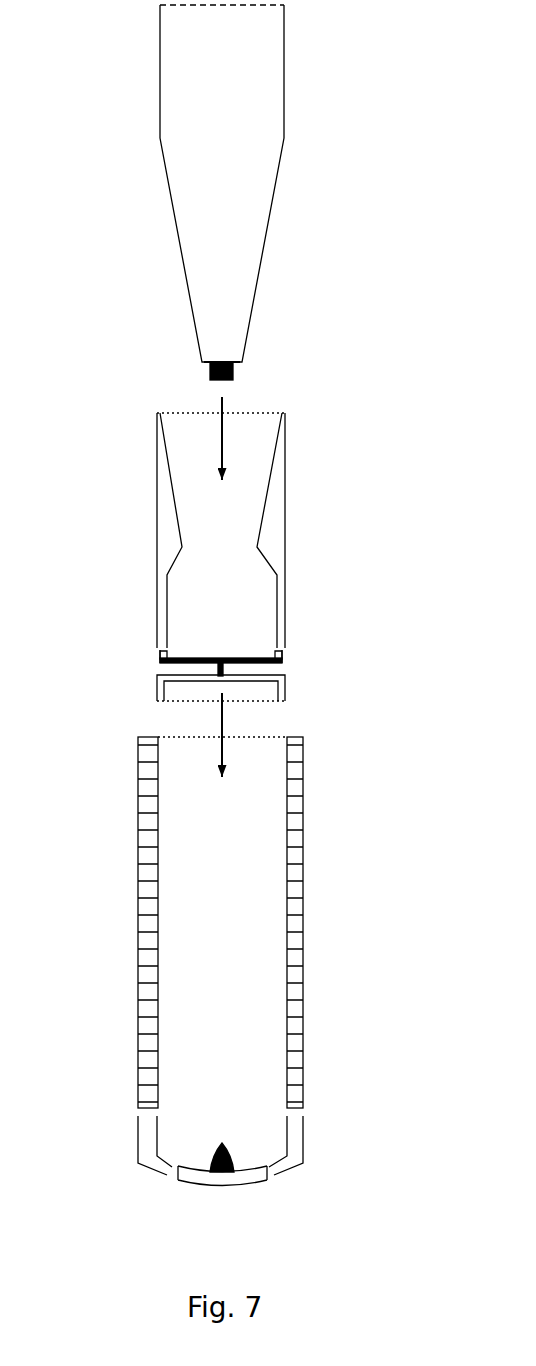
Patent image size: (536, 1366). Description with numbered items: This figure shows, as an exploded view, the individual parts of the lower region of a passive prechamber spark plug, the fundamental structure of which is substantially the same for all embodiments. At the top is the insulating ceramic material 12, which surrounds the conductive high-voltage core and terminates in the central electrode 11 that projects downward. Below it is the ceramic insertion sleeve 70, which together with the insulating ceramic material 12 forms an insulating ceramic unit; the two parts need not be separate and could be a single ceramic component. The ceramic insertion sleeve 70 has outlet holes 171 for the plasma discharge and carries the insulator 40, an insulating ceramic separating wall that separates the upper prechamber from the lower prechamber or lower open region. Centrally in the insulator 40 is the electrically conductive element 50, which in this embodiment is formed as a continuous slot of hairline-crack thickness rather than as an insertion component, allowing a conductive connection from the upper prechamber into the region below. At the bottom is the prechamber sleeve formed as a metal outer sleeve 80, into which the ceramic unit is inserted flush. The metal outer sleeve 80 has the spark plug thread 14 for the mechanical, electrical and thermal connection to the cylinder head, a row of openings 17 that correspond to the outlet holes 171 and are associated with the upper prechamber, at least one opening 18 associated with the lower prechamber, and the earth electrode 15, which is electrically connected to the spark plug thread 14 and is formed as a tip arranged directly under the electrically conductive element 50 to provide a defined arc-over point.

The insulating ceramic material 12 is at (221, 192).
The central electrode 11 is at (236, 375).
The ceramic insertion sleeve 70 is at (218, 557).
The outlet holes 171 is at (156, 650).
The electrically conductive element 50 is at (216, 661).
The insulator 40 is at (254, 667).
The metal outer sleeve 80 is at (214, 1004).
The spark plug thread 14 is at (296, 870).
The openings 17 is at (296, 1114).
The earth electrode 15 is at (236, 1153).
The opening 18 is at (170, 1178).